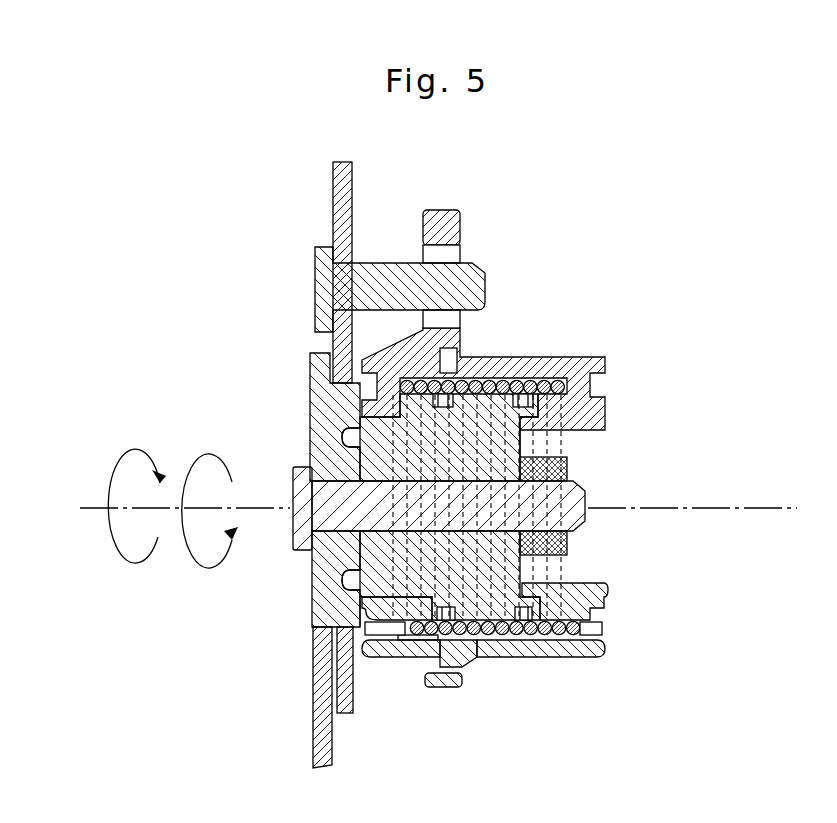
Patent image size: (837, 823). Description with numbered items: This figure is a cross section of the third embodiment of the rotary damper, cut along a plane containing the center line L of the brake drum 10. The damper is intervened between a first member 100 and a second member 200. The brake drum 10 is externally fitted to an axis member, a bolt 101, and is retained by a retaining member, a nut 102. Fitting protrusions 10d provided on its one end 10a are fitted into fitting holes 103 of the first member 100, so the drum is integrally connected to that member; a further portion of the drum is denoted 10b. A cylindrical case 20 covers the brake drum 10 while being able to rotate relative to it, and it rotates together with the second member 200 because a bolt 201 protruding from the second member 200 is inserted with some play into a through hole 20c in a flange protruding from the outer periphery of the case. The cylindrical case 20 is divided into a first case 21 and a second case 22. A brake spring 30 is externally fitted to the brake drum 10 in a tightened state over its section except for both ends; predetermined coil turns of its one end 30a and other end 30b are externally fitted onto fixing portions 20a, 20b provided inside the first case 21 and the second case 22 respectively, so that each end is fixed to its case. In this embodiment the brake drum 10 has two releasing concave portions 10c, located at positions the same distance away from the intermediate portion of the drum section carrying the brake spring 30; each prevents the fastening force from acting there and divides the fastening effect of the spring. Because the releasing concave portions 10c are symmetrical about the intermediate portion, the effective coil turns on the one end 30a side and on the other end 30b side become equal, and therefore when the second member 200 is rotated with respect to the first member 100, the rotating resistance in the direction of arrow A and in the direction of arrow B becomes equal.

The brake drum 10 is at (522, 566).
The one end of the brake drum 10a is at (345, 437).
The outer peripheral surface of hub 10b is at (520, 445).
The releasing concave portion 10c is at (445, 405).
The fitting protrusion 10d is at (362, 591).
The cylindrical case 20 is at (540, 775).
The fixing portion 20a is at (398, 605).
The fixing portion 20b is at (557, 608).
The through hole 20c is at (430, 256).
The first case 21 is at (412, 660).
The second case 22 is at (537, 660).
The brake spring 30 is at (563, 377).
The one end of the brake spring 30a is at (367, 625).
The other end of the brake spring 30b is at (604, 629).
The first member 100 is at (313, 718).
The axis member (bolt) 101 is at (586, 512).
The retaining member (nut) 102 is at (567, 463).
The fitting hole 103 is at (345, 580).
The second member 200 is at (331, 192).
The axis member (bolt) 201 is at (317, 268).
The center line L is at (762, 507).
The arrow A is at (210, 522).
The arrow B is at (137, 520).